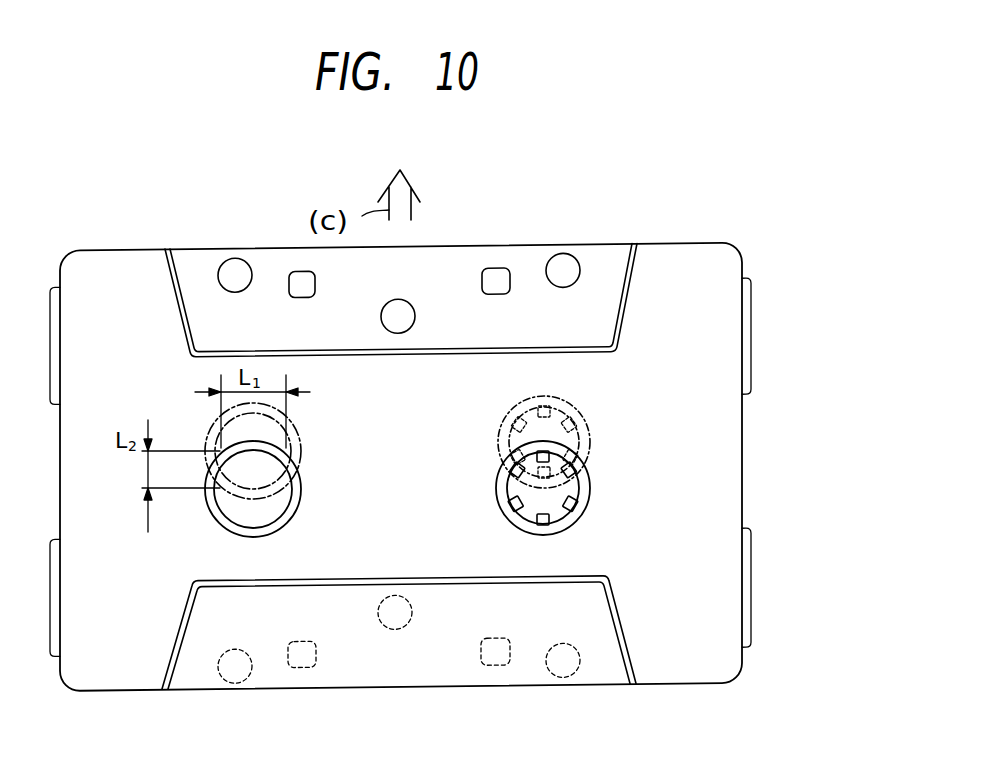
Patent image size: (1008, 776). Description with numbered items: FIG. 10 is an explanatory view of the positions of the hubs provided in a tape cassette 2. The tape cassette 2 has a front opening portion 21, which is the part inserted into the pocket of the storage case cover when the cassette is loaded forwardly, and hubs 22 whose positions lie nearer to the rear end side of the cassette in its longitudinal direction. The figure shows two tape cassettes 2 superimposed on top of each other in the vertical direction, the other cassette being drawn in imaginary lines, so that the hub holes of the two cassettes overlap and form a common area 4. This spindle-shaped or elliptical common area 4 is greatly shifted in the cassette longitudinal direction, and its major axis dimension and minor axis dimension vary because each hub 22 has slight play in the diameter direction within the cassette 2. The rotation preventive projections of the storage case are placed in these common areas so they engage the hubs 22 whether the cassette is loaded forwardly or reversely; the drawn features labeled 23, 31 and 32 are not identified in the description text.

The tape cassette 2 is at (677, 248).
The front opening portion 21 is at (515, 246).
The hub 22 is at (612, 451).
The engaging protrusions 23 is at (552, 422).
The lower hub hole 31 is at (585, 513).
The upper hub hole 32 is at (593, 449).
The common area 4 is at (247, 477).